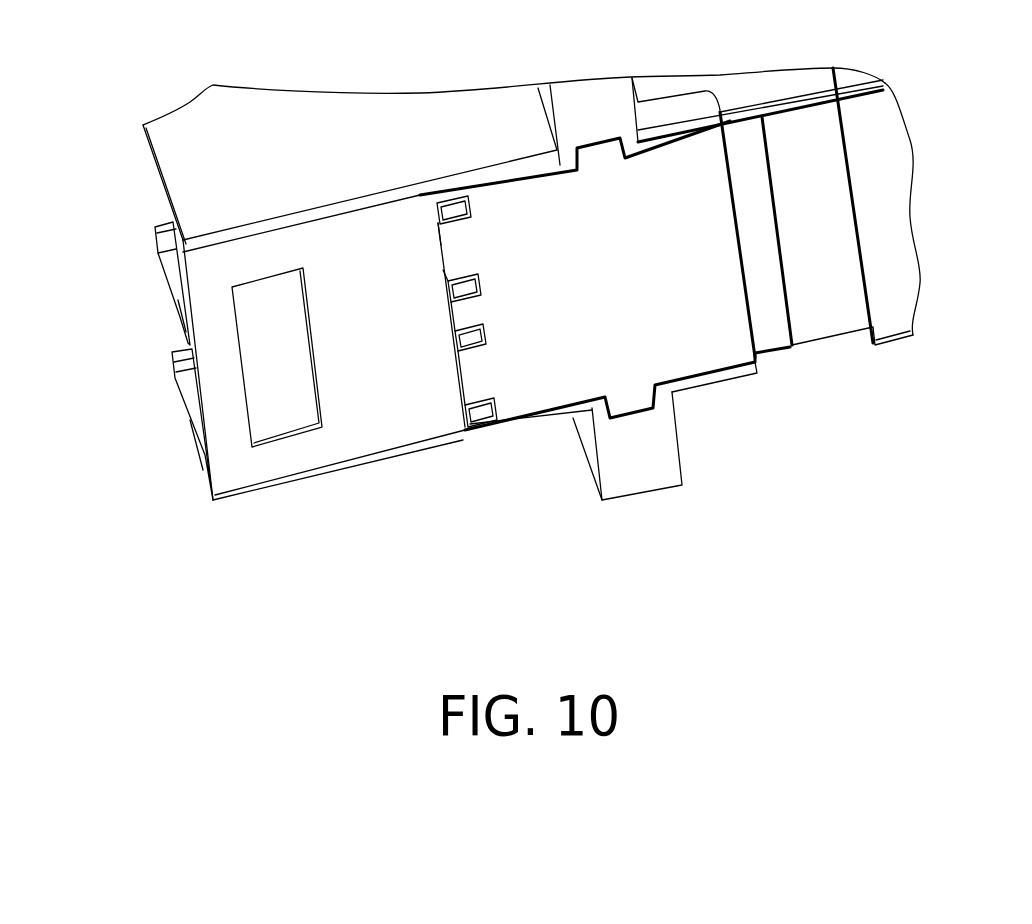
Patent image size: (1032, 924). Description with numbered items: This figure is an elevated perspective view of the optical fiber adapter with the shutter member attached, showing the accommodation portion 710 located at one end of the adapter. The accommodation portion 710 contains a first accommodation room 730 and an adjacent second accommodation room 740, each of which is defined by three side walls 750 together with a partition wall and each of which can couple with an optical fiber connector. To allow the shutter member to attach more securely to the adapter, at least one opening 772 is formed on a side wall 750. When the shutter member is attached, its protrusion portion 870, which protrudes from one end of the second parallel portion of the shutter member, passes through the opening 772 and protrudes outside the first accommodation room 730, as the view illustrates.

The accommodation portion 710 is at (407, 470).
The first accommodation room 730 is at (168, 388).
The second accommodation room 740 is at (150, 200).
The side wall 750 is at (262, 122).
The opening 772 is at (485, 332).
The protrusion portion 870 is at (488, 342).